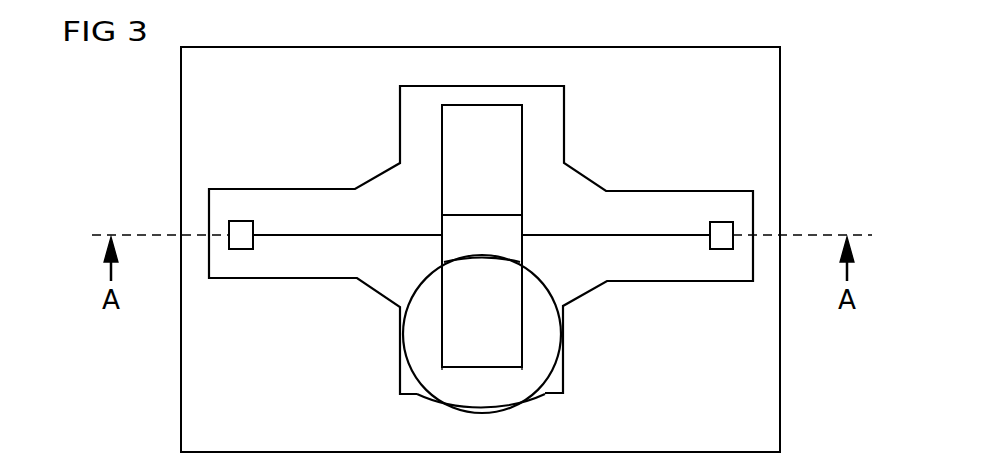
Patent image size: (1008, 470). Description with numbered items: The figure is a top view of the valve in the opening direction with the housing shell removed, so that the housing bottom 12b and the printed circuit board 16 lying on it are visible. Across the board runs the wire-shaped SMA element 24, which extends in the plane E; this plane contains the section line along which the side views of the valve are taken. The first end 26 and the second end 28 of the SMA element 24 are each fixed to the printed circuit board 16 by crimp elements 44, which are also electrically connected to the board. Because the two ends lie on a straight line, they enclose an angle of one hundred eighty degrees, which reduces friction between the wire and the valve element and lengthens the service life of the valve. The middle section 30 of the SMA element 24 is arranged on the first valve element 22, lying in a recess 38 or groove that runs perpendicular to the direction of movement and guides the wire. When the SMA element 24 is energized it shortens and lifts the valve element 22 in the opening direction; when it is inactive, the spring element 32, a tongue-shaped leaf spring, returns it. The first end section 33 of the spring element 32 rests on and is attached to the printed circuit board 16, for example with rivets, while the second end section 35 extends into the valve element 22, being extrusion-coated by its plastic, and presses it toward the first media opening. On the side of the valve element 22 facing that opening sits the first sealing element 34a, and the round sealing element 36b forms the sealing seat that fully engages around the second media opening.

The second housing part 12b is at (190, 346).
The printed circuit board 16 is at (211, 188).
The first valve element 22 is at (441, 335).
The first wire-shaped SMA element 24 is at (633, 237).
The first end 26 is at (241, 249).
The second end 28 is at (725, 250).
The middle section 30 is at (462, 232).
The spring element 32 is at (520, 136).
The first end section 33 is at (488, 114).
The first sealing element 34a is at (507, 349).
The second end section 35 is at (523, 336).
The sealing element 36b is at (423, 359).
The recess 38 is at (512, 228).
The crimp elements 44 is at (241, 222).
The plane E is at (140, 232).